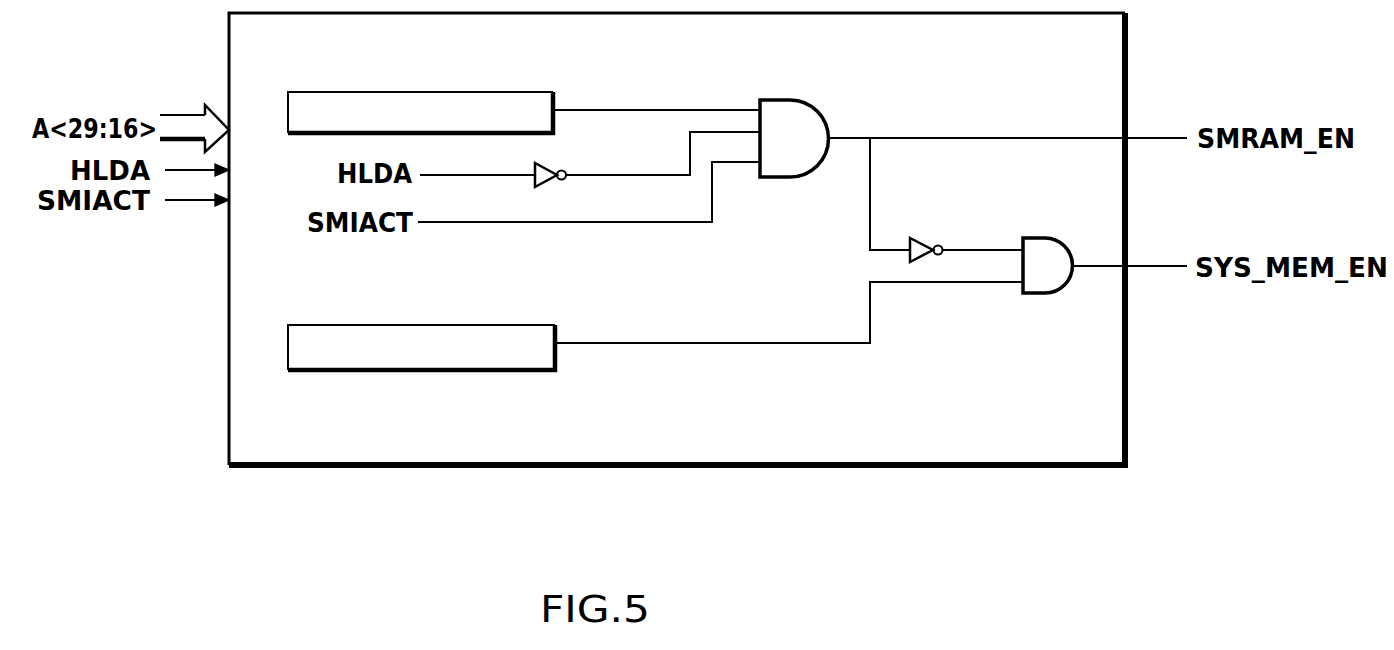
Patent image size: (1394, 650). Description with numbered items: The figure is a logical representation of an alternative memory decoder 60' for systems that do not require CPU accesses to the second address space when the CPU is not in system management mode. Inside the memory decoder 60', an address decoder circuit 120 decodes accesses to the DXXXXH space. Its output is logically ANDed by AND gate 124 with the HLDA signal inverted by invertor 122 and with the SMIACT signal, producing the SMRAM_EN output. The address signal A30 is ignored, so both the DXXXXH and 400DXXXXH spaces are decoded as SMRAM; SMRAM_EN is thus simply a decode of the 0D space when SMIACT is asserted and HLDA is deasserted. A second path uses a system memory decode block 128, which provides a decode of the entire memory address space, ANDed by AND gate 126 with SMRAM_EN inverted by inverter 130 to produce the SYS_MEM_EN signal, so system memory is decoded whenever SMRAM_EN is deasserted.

The memory decoder 60' is at (677, 264).
The address decoder circuit 120 is at (468, 92).
The invertor 122 is at (551, 186).
The AND gate 124 is at (814, 104).
The AND gate 126 is at (1066, 212).
The system memory decode block 128 is at (478, 325).
The inverter 130 is at (918, 238).